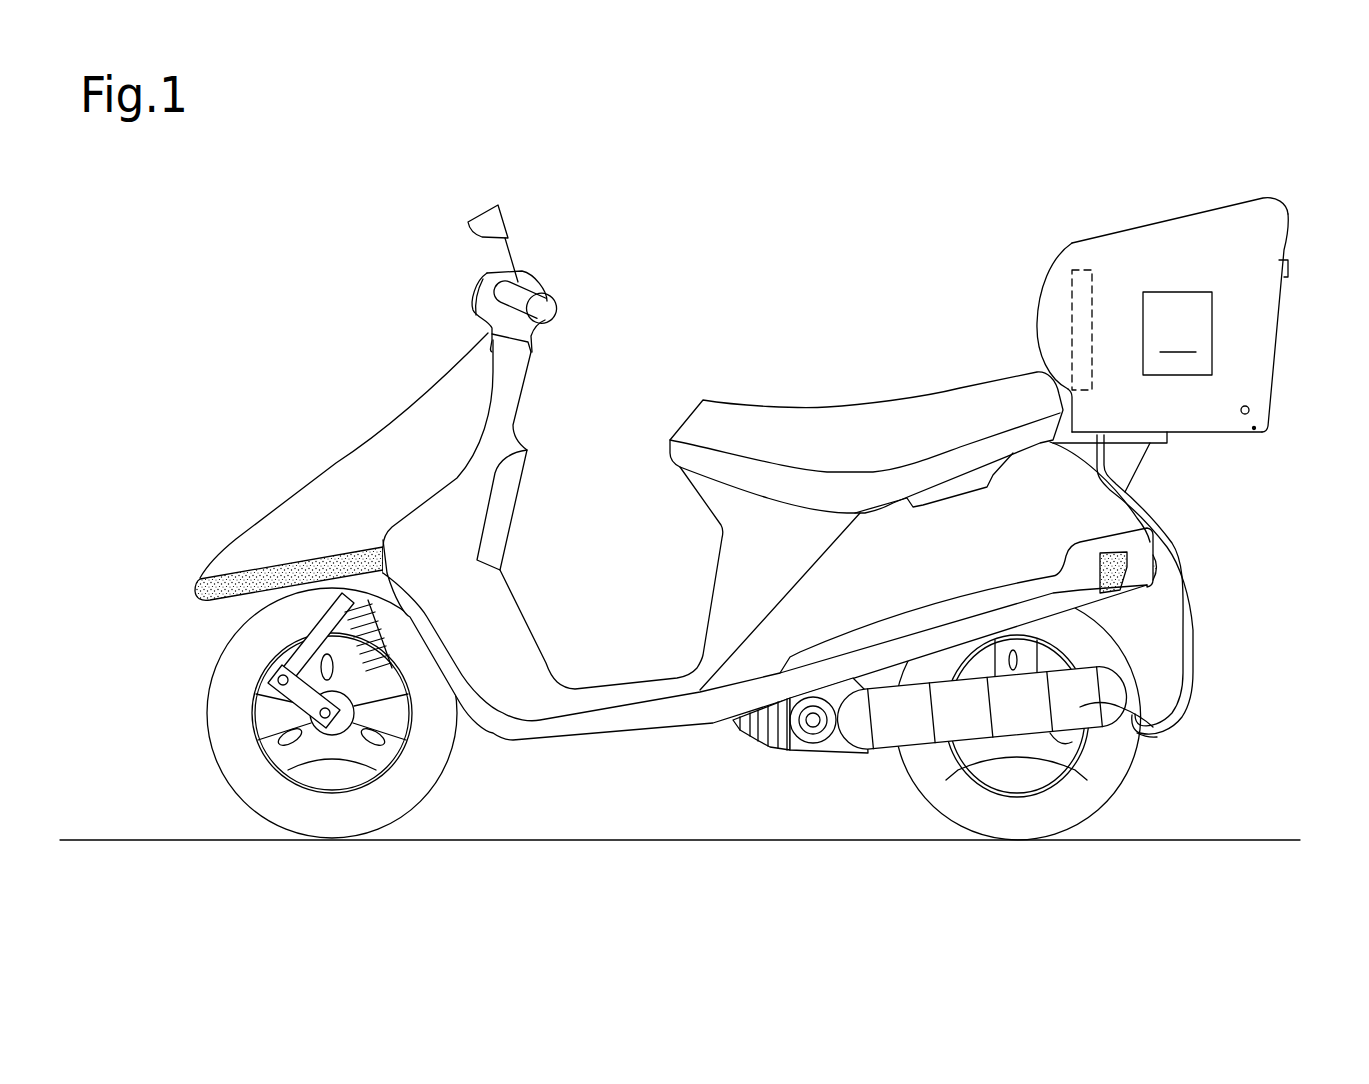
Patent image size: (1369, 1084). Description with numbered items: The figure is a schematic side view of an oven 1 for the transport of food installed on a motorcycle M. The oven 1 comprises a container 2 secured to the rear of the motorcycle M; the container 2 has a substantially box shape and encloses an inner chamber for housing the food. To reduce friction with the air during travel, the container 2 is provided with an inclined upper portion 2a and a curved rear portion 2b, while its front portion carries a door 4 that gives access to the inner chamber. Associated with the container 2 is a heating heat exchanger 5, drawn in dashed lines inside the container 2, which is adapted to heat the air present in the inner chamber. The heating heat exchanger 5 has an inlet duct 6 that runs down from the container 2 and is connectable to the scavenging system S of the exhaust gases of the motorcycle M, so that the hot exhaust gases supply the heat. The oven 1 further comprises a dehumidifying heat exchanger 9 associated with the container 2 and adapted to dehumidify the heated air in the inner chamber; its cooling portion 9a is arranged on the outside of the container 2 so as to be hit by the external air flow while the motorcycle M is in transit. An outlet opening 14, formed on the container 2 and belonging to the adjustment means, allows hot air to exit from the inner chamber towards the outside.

The oven 1 is at (1152, 432).
The container 2 is at (1152, 322).
The inclined upper portion 2a is at (1132, 228).
The curved rear portion 2b is at (1037, 320).
The door 4 is at (1270, 348).
The heating heat exchanger 5 is at (1090, 268).
The inlet duct 6 is at (1100, 438).
The dehumidifying heat exchanger 9 is at (1238, 312).
The cooling portion 9a is at (1179, 336).
The outlet opening 14 is at (1250, 411).
The motorcycle M is at (296, 322).
The scavenging system S is at (1107, 703).